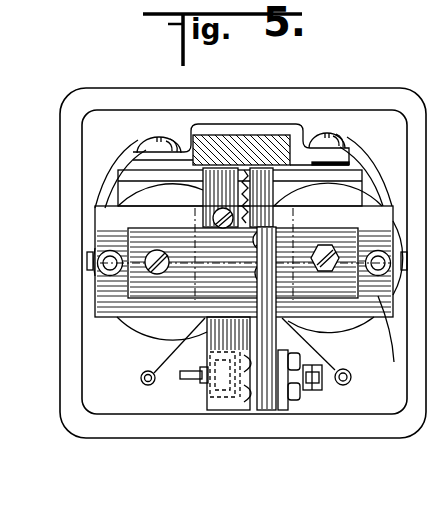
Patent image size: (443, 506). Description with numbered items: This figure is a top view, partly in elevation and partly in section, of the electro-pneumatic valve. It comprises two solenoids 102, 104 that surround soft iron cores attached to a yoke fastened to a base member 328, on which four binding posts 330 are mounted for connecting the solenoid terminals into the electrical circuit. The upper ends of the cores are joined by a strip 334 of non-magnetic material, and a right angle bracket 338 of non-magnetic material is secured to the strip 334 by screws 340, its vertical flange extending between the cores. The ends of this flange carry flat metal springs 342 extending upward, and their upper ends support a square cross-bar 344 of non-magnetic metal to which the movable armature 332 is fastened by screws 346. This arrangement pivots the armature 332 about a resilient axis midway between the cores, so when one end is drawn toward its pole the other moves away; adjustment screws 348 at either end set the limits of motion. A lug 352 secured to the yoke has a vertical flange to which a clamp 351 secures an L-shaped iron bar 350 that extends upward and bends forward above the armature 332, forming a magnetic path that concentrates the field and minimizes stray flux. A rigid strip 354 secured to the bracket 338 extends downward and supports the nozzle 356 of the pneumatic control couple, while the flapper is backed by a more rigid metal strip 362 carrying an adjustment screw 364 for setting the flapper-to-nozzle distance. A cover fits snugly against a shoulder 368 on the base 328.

The shoulder 368 is at (67, 130).
The base member 328 is at (373, 122).
The clamp 351 is at (185, 132).
The L-shaped iron bar 350 is at (252, 140).
The lug 352 is at (134, 172).
The square cross-bar 344 is at (265, 210).
The screws 340 is at (224, 229).
The screws 346 is at (275, 246).
The adjustment screws 348 is at (157, 252).
The armature 332 is at (137, 281).
The solenoid 102 is at (137, 323).
The solenoid 104 is at (337, 322).
The rigid strip 354 is at (180, 362).
The binding posts 330 is at (140, 378).
The strip 334 is at (344, 342).
The right angle bracket 338 is at (198, 390).
The nozzle 356 is at (225, 412).
The flat metal springs 342 is at (258, 410).
The rigid metal strip 362 is at (287, 410).
The adjustment screw 364 is at (323, 390).